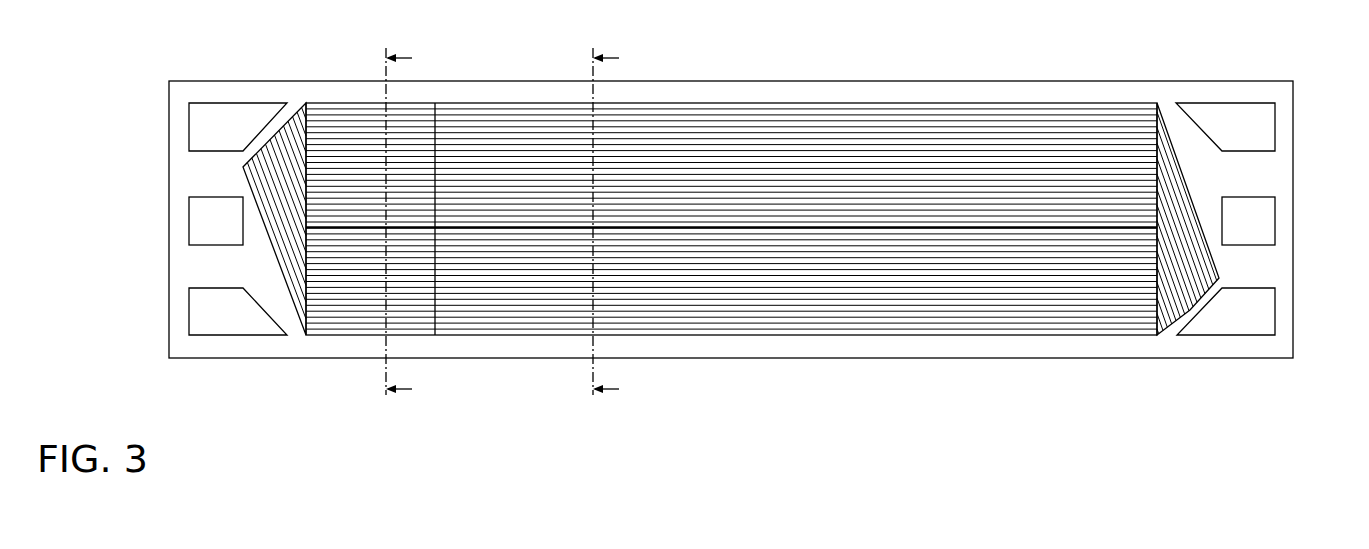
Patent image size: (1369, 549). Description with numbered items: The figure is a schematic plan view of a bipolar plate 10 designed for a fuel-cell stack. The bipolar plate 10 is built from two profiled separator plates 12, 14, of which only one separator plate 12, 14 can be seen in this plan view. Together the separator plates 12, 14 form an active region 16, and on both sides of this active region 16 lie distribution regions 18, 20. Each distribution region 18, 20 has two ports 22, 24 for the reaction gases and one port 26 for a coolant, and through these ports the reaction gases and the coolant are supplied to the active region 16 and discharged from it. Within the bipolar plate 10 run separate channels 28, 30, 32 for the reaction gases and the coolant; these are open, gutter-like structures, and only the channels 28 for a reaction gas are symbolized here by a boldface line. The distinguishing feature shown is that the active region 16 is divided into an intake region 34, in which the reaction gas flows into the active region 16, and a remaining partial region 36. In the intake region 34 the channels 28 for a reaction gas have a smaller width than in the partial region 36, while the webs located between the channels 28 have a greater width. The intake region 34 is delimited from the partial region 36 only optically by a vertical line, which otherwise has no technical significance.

The bipolar plate 10 is at (820, 58).
The separator plate 12 is at (1094, 80).
The separator plate 14 is at (731, 219).
The active region 16 is at (498, 85).
The distribution region 18 is at (241, 91).
The distribution region 20 is at (1228, 91).
The port for reaction gas 22 is at (205, 127).
The port for reaction gas 24 is at (206, 312).
The port for coolant 26 is at (205, 222).
The channel for reaction gas 28 is at (932, 231).
The channel 30 is at (663, 105).
The channel 32 is at (731, 174).
The intake region 34 is at (416, 108).
The partial region 36 is at (745, 160).